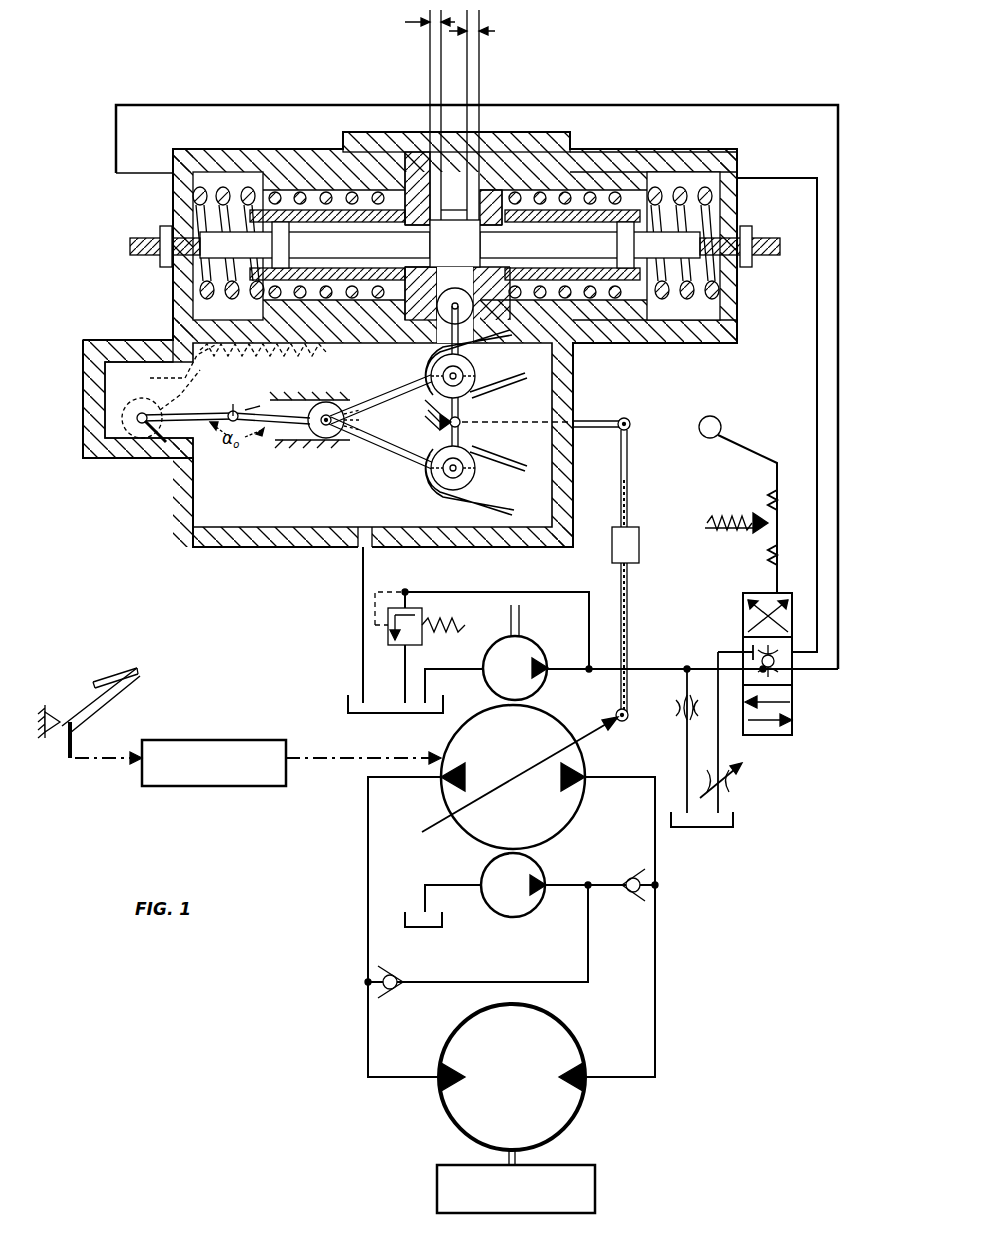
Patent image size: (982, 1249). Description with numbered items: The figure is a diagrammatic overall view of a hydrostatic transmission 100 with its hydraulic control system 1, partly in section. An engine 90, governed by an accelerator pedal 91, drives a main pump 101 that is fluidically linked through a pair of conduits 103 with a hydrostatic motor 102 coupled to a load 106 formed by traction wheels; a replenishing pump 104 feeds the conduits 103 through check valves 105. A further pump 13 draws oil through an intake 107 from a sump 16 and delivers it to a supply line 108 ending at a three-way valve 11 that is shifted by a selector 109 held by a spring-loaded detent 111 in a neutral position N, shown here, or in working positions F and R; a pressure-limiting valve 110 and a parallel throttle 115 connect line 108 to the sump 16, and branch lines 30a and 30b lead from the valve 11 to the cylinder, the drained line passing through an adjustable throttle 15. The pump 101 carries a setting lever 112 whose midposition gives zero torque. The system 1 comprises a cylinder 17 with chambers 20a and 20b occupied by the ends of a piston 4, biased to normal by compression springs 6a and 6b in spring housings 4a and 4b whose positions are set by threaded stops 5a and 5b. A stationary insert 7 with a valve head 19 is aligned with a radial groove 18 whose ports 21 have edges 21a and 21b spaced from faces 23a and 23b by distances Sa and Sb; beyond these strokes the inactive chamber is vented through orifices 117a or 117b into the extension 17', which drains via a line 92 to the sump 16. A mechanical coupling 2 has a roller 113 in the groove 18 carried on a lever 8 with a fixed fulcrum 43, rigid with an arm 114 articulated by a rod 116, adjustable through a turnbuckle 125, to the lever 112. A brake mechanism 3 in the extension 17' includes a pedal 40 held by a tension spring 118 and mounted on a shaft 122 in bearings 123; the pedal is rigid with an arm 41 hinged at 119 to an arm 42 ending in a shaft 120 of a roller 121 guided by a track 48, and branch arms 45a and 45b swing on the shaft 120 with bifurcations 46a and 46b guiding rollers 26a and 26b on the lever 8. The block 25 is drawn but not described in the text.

The hydraulic system 1 is at (762, 158).
The mechanical coupling 2 is at (421, 450).
The brake mechanism 3 is at (100, 462).
The piston 4 is at (625, 168).
The spring housing 4a is at (648, 200).
The spring housing 4b is at (268, 198).
The stop 5a is at (705, 243).
The stop 5b is at (190, 250).
The compression spring 6a is at (737, 303).
The compression spring 6b is at (200, 205).
The stationary elongate insert 7 is at (545, 230).
The lever 8 is at (438, 428).
The three-way valve 11 is at (778, 679).
The pump 13 is at (532, 648).
The adjustable throttle 15 is at (730, 782).
The sump 16 is at (708, 827).
The cylinder 17 is at (456, 109).
The cylinder extension 17' is at (275, 549).
The radial groove 18 is at (441, 188).
The valve head 19 is at (462, 244).
The fluid chamber 20a is at (712, 185).
The fluid chamber 20b is at (215, 177).
The port 21 is at (445, 222).
The edge 21a is at (590, 245).
The edge 21b is at (315, 245).
The face 23a is at (585, 343).
The face 23b is at (422, 300).
The valve block 25 is at (412, 185).
The roller 26a is at (470, 364).
The roller 26b is at (474, 478).
The branch line 30a is at (817, 275).
The branch line 30b is at (838, 348).
The pedal 40 is at (150, 378).
The arm 41 is at (200, 414).
The arm 42 is at (250, 412).
The fulcrum 43 is at (462, 424).
The branch arm 45a is at (392, 400).
The branch arm 45b is at (384, 462).
The bifurcation 46a is at (508, 382).
The bifurcation 46b is at (500, 518).
The track 48 is at (290, 440).
The engine 90 is at (205, 745).
The accelerator pedal 91 is at (95, 710).
The line 92 is at (363, 580).
The hydrostatic transmission 100 is at (355, 994).
The main pump 101 is at (578, 720).
The hydrostatic motor 102 is at (555, 1118).
The conduits 103 is at (368, 1048).
The replenishing pump 104 is at (512, 912).
The check valve 105 is at (635, 872).
The load 106 is at (596, 1198).
The intake 107 is at (485, 665).
The supply line 108 is at (642, 667).
The selector 109 is at (718, 418).
The pressure-limiting valve 110 is at (388, 626).
The spring-loaded detent 111 is at (757, 530).
The setting lever 112 is at (438, 822).
The roller 113 is at (450, 312).
The arm 114 is at (610, 418).
The throttle 115 is at (676, 712).
The rod 116 is at (628, 478).
The orifices 117a is at (600, 268).
The orifices 117b is at (345, 222).
The tension spring 118 is at (250, 404).
The hinge 119 is at (233, 405).
The shaft 120 is at (326, 438).
The roller 121 is at (348, 416).
The shaft 122 is at (118, 420).
The bearings 123 is at (150, 432).
The turnbuckle 125 is at (640, 546).
The forward position F is at (745, 628).
The neutral position N is at (778, 660).
The reverse position R is at (762, 720).
The distance Sa is at (480, 31).
The distance Sb is at (430, 22).